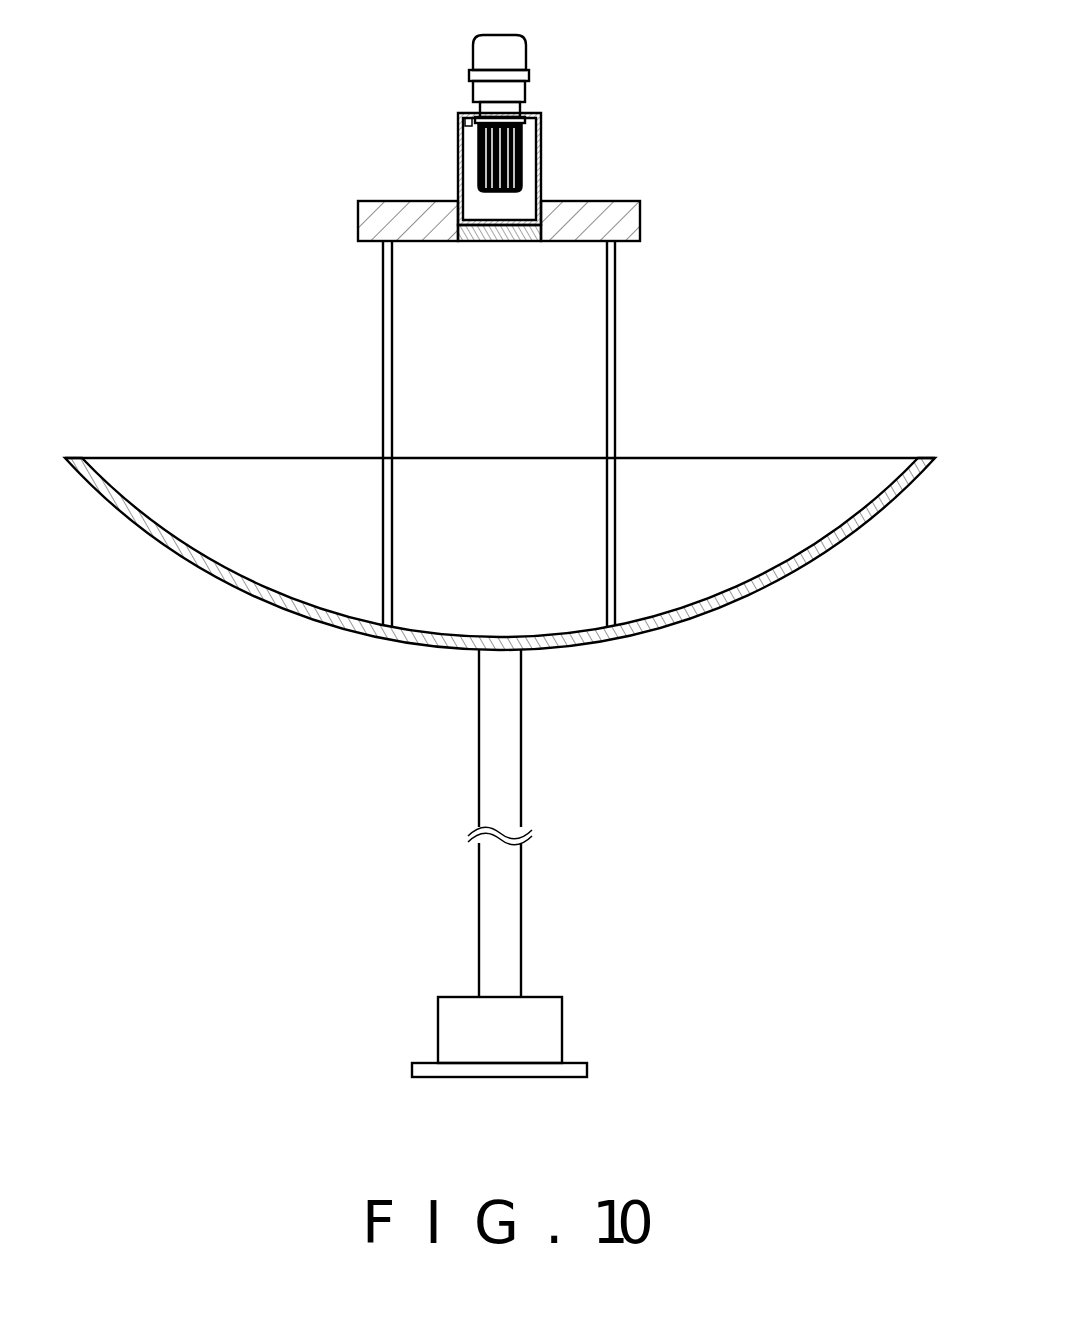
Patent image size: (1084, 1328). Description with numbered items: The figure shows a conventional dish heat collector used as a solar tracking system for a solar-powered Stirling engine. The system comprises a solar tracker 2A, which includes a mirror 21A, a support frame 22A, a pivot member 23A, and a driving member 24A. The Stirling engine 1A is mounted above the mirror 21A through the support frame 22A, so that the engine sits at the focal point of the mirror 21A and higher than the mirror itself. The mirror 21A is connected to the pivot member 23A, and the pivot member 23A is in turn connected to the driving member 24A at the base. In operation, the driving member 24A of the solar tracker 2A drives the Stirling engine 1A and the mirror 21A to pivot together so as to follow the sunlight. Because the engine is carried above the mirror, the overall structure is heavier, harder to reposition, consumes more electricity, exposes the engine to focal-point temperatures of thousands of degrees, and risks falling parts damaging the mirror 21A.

The Stirling engine 1A is at (632, 83).
The solar tracker 2A is at (500, 619).
The mirror 21A is at (733, 595).
The support frame 22A is at (613, 395).
The pivot member 23A is at (507, 728).
The driving member 24A is at (543, 1030).